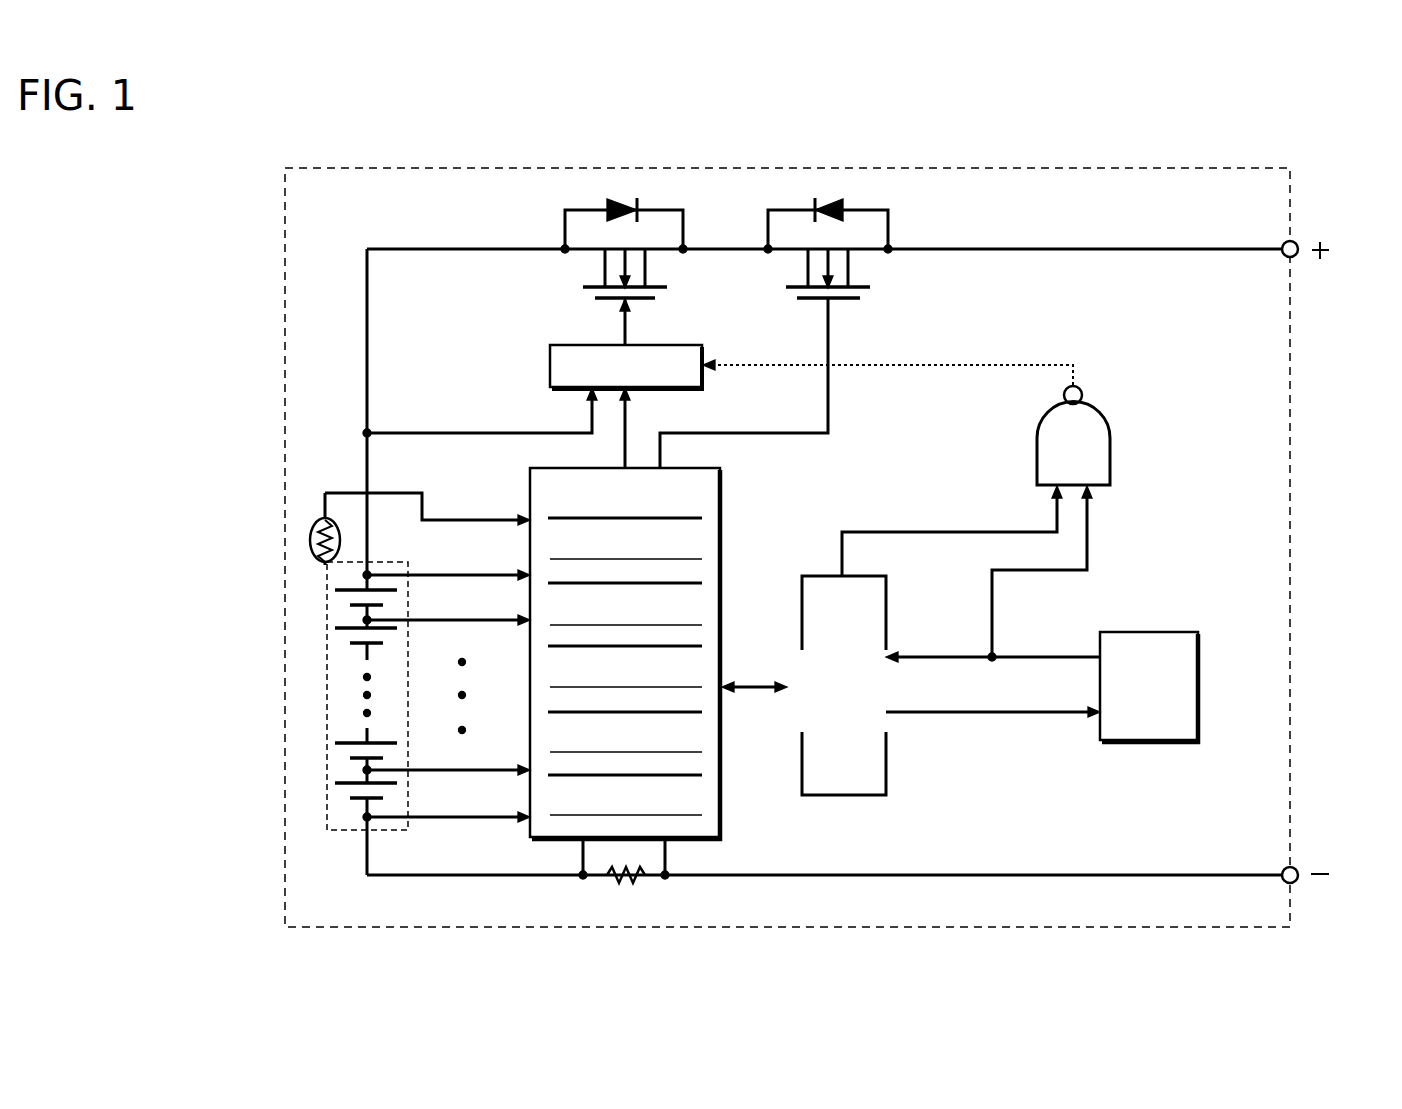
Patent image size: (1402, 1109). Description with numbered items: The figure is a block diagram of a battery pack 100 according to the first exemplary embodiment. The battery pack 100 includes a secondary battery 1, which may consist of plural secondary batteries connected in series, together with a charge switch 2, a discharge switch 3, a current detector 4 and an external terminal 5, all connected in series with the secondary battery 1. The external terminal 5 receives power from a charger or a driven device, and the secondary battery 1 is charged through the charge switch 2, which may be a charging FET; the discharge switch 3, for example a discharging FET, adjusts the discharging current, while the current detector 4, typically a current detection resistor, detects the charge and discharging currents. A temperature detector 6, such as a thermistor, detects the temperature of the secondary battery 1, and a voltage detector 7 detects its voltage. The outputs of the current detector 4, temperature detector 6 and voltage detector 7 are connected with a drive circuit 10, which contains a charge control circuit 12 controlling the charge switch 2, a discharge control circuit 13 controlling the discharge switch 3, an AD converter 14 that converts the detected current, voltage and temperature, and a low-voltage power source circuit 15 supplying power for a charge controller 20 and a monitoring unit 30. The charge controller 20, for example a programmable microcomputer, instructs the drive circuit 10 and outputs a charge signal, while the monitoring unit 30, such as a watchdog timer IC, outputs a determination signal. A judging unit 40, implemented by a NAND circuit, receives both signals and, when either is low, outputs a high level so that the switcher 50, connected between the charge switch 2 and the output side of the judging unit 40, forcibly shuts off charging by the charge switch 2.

The battery pack 100 is at (1268, 146).
The secondary battery 1 is at (325, 683).
The charge switch 2 is at (600, 238).
The discharge switch 3 is at (866, 270).
The current detector 4 is at (627, 885).
The external terminal 5 is at (1297, 243).
The temperature detector 6 is at (309, 543).
The voltage detector 7 is at (705, 796).
The drive circuit 10 is at (674, 671).
The charge control circuit 12 is at (705, 535).
The discharge control circuit 13 is at (705, 601).
The AD converter 14 is at (705, 660).
The low-voltage power source circuit 15 is at (705, 727).
The charge controller 20 is at (886, 742).
The monitoring unit 30 is at (1143, 630).
The judging unit 40 is at (1110, 430).
The switcher 50 is at (550, 362).